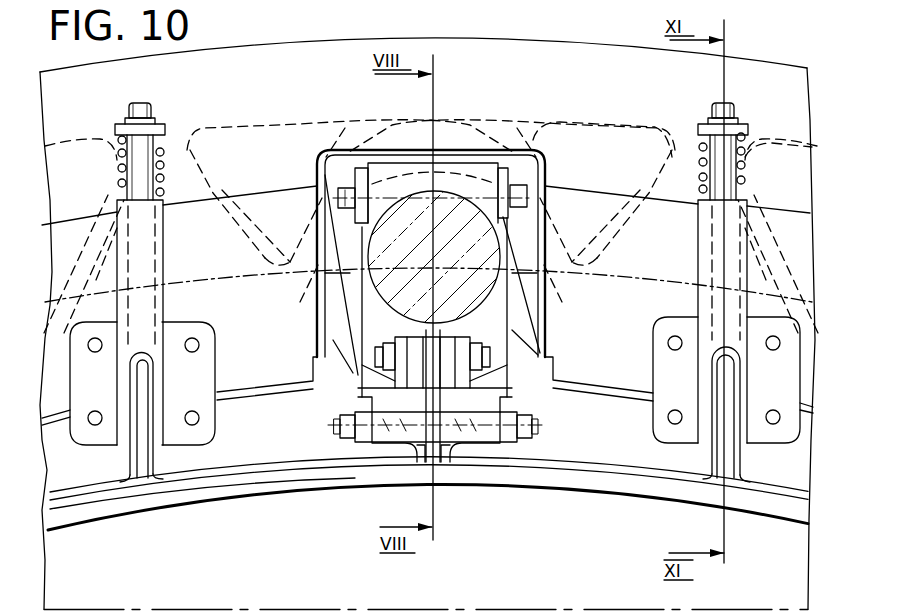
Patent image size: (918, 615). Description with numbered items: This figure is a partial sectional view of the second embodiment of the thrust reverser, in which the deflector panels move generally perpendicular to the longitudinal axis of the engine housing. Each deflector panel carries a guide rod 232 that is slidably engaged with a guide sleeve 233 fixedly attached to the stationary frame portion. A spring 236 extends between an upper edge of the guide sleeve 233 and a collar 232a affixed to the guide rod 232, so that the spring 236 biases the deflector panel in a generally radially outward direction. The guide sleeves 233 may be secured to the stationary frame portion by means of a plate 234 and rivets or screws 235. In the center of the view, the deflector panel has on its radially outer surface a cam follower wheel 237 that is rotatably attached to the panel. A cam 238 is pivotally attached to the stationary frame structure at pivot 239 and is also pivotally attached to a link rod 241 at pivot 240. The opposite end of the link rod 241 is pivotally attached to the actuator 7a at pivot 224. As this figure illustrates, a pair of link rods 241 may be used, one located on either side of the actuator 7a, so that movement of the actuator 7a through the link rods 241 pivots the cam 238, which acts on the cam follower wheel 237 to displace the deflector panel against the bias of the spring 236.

The pivot 224 is at (323, 150).
The link rod 241 is at (366, 168).
The actuator 7a is at (458, 220).
The spring 236 is at (702, 147).
The collar 232a is at (748, 126).
The guide rod 232 is at (719, 151).
The guide sleeve 233 is at (706, 267).
The plate 234 is at (673, 320).
The rivets or screws 235 is at (675, 344).
The pivot 239 is at (490, 354).
The pivot 240 is at (340, 428).
The cam 238 is at (427, 410).
The cam follower wheel 237 is at (445, 447).